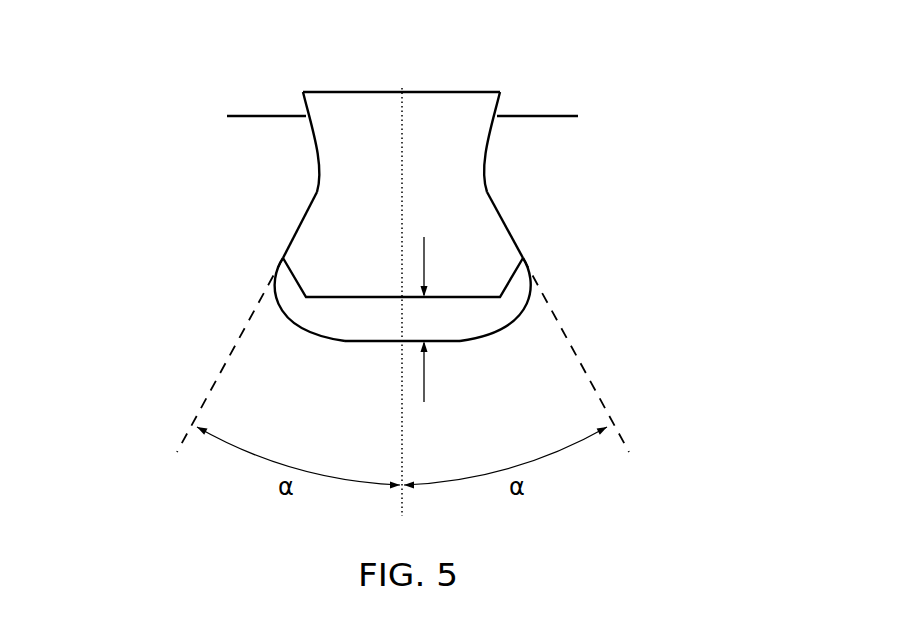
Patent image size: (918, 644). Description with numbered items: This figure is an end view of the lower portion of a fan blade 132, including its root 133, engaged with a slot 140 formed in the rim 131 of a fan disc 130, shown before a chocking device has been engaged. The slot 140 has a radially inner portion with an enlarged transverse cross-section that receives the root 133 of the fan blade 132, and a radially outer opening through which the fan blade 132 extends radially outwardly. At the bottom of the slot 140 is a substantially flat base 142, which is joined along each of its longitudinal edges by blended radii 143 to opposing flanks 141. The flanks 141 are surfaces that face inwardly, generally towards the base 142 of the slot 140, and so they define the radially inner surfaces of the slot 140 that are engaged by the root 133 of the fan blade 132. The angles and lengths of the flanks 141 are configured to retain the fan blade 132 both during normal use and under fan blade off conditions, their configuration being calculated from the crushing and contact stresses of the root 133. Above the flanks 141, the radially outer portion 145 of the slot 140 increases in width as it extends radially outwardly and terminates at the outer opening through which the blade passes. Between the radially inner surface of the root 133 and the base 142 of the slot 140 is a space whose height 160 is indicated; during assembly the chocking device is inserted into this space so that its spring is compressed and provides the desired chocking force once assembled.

The fan disc 130 is at (700, 266).
The rim 131 is at (138, 244).
The fan blade 132 is at (378, 144).
The root 133 is at (465, 192).
The slot 140 is at (328, 337).
The flanks 141 is at (300, 228).
The base 142 is at (450, 344).
The blended radii 143 is at (276, 294).
The radially outer portion 145 is at (500, 115).
The height of space for accommodating chocking device 160 is at (469, 334).